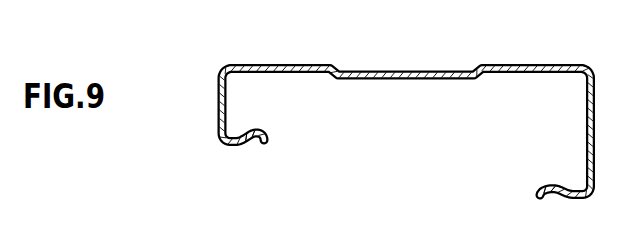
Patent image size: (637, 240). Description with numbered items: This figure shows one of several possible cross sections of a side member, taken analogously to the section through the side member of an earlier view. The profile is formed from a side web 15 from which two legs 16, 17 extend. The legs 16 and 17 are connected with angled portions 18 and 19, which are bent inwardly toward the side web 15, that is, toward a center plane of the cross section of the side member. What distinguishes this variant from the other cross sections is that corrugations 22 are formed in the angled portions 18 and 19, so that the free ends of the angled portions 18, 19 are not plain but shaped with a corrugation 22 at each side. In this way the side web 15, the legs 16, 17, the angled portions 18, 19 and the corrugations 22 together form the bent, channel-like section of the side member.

The side web 15 is at (408, 70).
The leg 16 is at (587, 108).
The leg 17 is at (226, 90).
The angled portion 18 is at (238, 132).
The angled portion 19 is at (568, 192).
The corrugation 22 is at (254, 149).